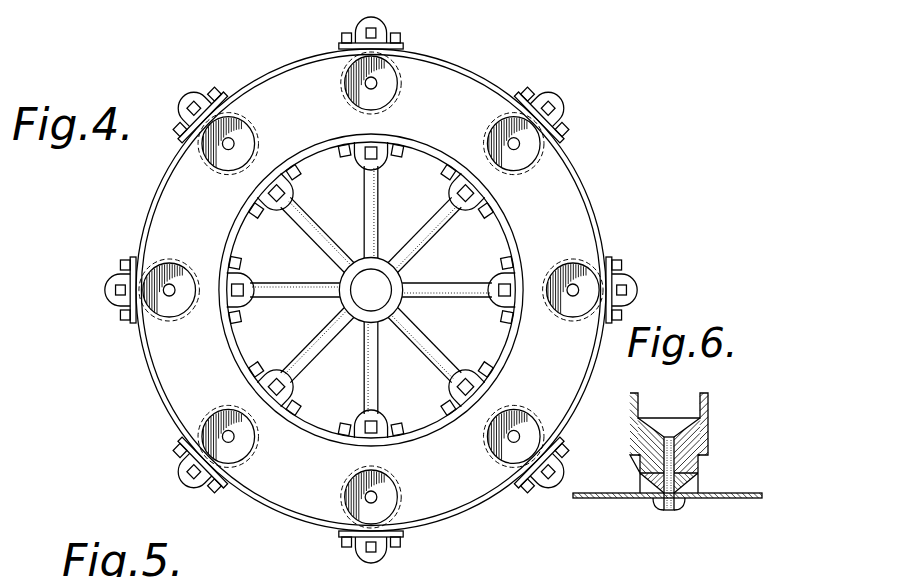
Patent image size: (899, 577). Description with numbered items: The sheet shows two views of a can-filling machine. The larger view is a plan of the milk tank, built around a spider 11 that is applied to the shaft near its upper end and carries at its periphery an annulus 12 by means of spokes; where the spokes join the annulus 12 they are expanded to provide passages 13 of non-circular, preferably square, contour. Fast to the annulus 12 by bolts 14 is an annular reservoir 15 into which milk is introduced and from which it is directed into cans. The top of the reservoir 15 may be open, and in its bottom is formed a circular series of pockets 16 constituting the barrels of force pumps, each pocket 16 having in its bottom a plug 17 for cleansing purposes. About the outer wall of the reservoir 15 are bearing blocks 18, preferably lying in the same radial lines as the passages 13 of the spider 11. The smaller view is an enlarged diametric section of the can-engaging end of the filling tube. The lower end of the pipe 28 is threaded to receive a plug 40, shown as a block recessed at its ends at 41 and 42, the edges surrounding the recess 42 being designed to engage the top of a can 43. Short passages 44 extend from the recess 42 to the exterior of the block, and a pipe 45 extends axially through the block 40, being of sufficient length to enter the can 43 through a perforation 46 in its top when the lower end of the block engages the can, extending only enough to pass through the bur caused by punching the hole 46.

In FIG. 4, the spider 11 is at (340, 234).
In FIG. 4, the annulus 12 is at (237, 235).
In FIG. 4, the passages 13 is at (273, 372).
In FIG. 4, the bolts 14 is at (341, 427).
In FIG. 4, the annular reservoir 15 is at (601, 184).
In FIG. 4, the pockets 16 is at (182, 304).
In FIG. 4, the plug 17 is at (234, 143).
In FIG. 4, the bearing blocks 18 is at (190, 99).
In FIG. 6, the pipe 28 is at (706, 395).
In FIG. 6, the plug 40 is at (690, 438).
In FIG. 6, the recess 41 is at (655, 428).
In FIG. 6, the recess 42 is at (682, 488).
In FIG. 6, the can 43 is at (594, 494).
In FIG. 6, the short passages 44 is at (647, 476).
In FIG. 6, the pipe 45 is at (663, 448).
In FIG. 6, the perforation 46 is at (663, 501).